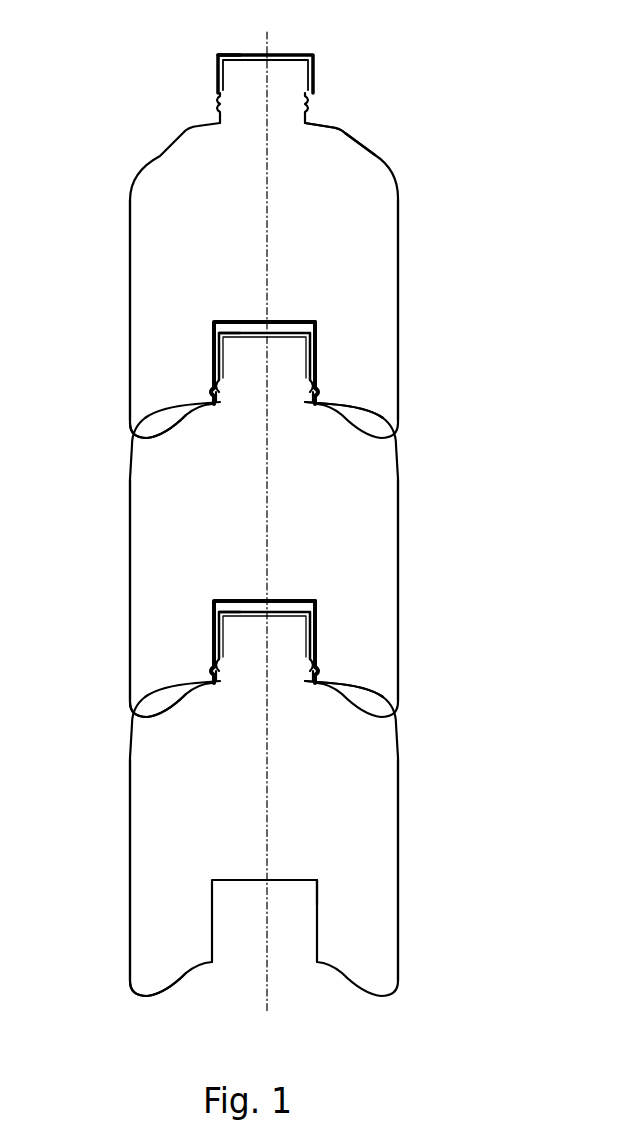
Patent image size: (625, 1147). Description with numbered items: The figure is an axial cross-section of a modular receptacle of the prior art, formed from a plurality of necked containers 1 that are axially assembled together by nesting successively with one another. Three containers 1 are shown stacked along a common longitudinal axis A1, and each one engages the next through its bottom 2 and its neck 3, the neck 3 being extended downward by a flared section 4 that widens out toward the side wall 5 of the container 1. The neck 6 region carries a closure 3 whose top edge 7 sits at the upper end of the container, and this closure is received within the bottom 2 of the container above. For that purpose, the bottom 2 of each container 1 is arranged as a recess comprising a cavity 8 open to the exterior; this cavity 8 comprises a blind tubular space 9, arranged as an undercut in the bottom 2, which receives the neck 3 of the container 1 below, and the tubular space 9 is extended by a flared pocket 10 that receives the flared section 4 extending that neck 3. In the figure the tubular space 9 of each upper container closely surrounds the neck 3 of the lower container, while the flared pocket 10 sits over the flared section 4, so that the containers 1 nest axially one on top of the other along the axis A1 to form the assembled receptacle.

The necked container 1 is at (211, 590).
The bottom 2 is at (407, 363).
The neck 3 is at (340, 80).
The flared section 4 is at (357, 147).
The side wall 5 is at (400, 252).
The neck 6 is at (300, 87).
The cap top edge 7 is at (218, 57).
The cavity 8 is at (200, 350).
The blind tubular space 9 is at (318, 330).
The flared pocket 10 is at (133, 425).
The longitudinal axis A1 is at (266, 514).